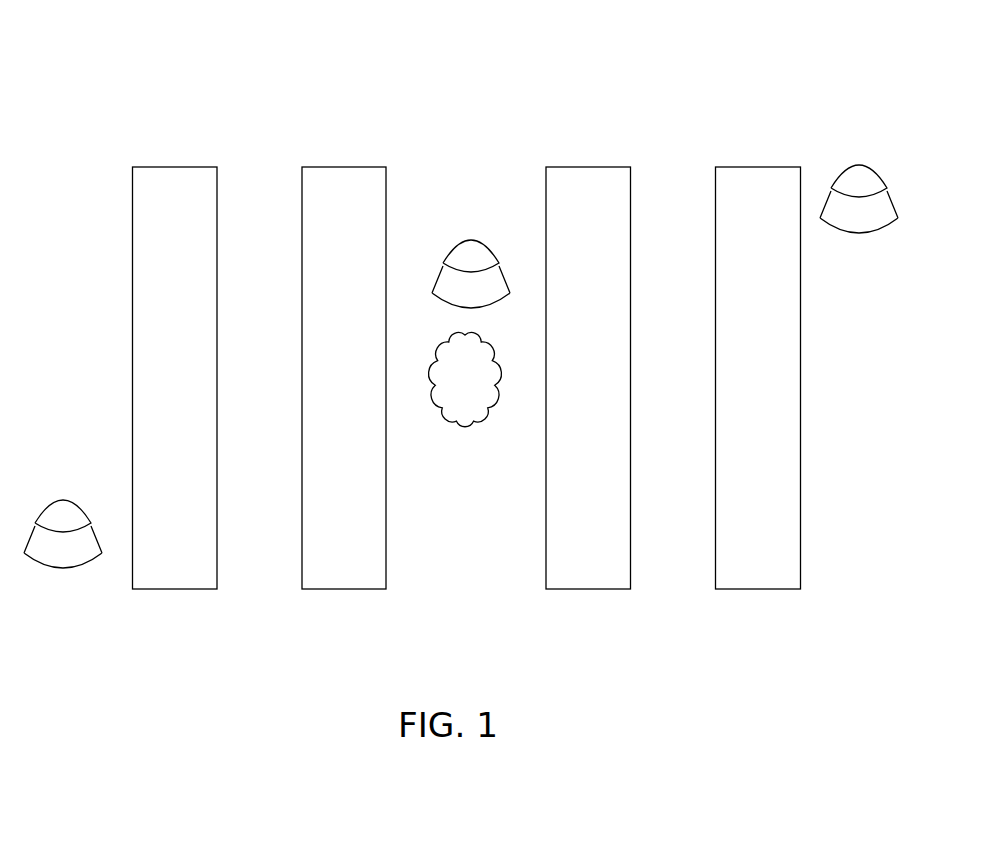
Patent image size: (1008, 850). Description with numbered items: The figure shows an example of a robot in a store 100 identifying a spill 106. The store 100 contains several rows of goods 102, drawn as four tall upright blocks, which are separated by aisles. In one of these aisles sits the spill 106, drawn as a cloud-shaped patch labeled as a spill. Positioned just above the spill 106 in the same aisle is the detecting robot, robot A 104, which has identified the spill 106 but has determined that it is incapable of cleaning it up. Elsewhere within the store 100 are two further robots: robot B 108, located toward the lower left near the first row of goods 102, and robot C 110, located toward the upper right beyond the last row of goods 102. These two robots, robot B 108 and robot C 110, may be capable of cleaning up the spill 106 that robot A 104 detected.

The store 100 is at (92, 94).
The rows of goods 102 is at (176, 166).
The robot A 104 is at (472, 238).
The spill 106 is at (469, 432).
The robot B 108 is at (68, 498).
The robot C 110 is at (863, 164).